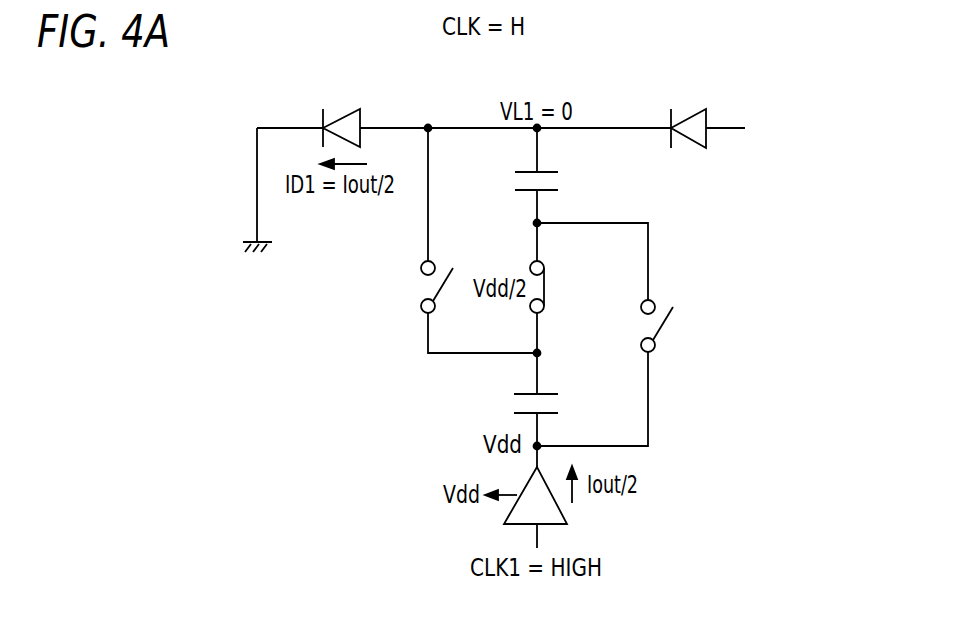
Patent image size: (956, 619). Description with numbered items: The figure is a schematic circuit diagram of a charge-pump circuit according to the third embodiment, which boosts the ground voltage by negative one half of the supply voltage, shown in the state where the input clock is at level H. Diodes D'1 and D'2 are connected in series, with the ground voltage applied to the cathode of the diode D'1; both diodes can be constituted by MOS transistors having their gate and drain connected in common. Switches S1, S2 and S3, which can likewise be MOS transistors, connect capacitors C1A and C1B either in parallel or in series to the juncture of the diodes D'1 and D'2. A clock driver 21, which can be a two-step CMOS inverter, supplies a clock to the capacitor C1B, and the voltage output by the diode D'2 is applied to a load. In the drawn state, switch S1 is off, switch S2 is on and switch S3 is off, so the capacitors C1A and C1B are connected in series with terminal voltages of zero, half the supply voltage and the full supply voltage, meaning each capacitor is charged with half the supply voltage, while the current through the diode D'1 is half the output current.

The clock driver 21 is at (560, 508).
The diode D'1 is at (339, 107).
The diode D'2 is at (685, 108).
The capacitor C1A is at (560, 180).
The capacitor C1B is at (513, 404).
The switch S1 is at (423, 287).
The switch S2 is at (555, 287).
The switch S3 is at (670, 326).